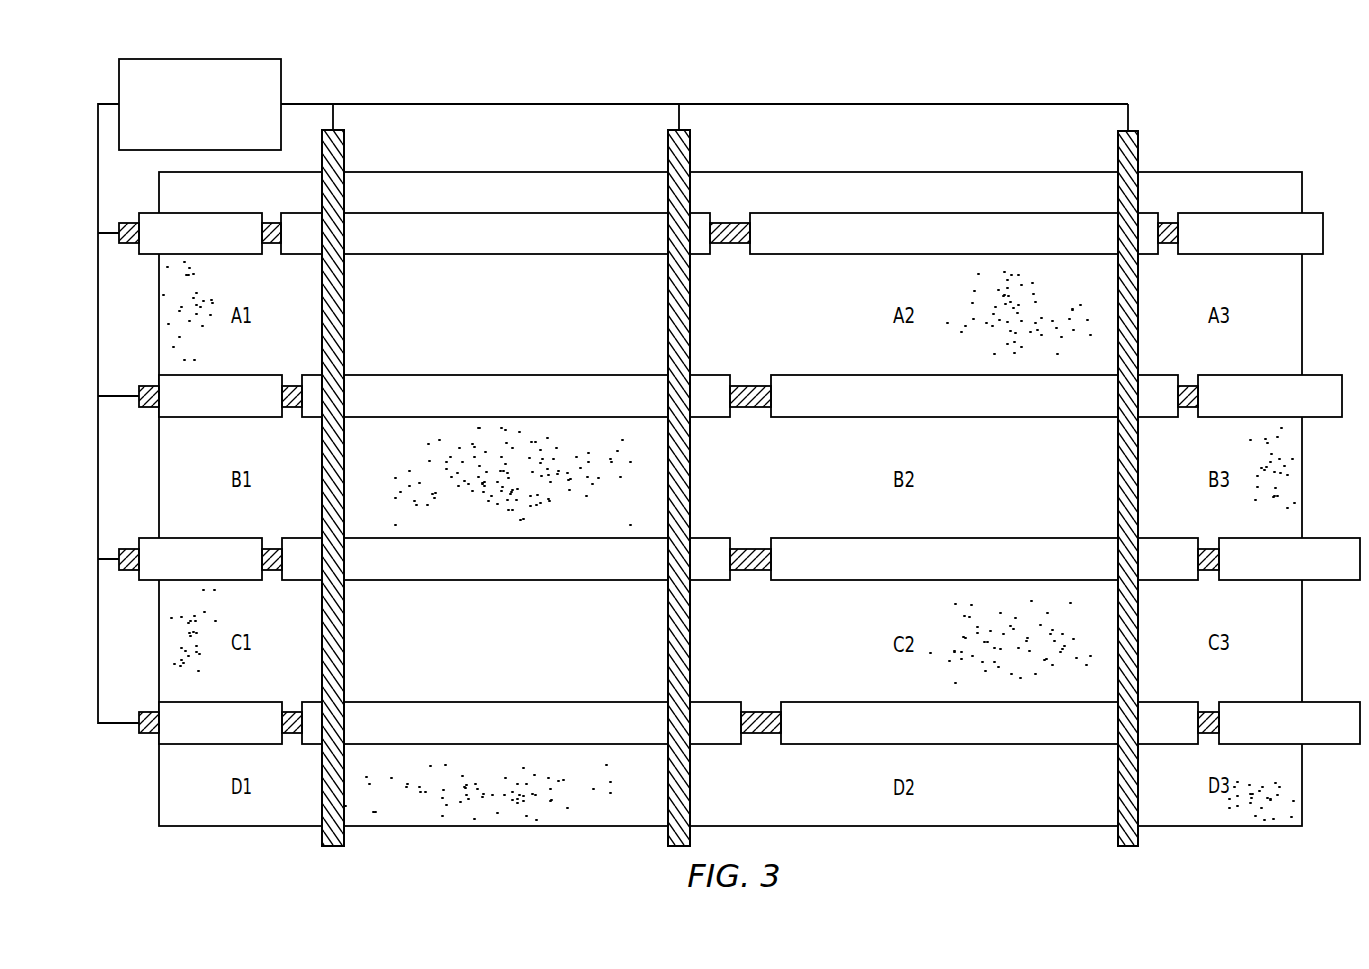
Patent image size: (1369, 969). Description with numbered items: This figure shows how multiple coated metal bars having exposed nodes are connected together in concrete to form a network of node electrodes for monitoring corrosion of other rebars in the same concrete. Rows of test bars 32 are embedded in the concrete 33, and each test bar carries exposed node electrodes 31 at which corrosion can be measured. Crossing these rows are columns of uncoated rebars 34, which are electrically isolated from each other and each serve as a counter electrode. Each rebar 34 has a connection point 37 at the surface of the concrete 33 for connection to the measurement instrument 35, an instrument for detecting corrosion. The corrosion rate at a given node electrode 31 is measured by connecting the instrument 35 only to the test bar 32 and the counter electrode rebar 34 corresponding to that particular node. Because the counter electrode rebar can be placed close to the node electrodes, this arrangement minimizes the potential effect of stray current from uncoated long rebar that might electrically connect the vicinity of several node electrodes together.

The node electrode 31 is at (276, 244).
The test bar 32 is at (1331, 747).
The frame 33 is at (902, 182).
The uncoated rebar 34 is at (322, 784).
The measurement instrument 35 is at (283, 84).
The connection point 37 is at (344, 131).